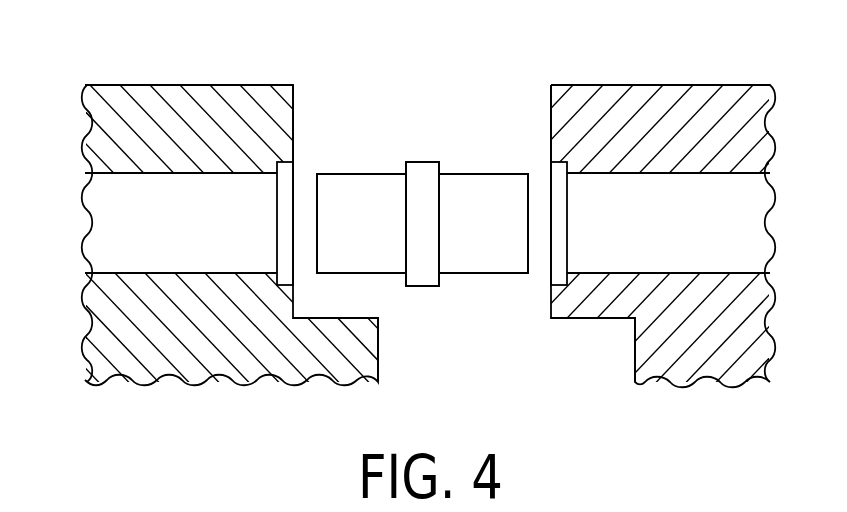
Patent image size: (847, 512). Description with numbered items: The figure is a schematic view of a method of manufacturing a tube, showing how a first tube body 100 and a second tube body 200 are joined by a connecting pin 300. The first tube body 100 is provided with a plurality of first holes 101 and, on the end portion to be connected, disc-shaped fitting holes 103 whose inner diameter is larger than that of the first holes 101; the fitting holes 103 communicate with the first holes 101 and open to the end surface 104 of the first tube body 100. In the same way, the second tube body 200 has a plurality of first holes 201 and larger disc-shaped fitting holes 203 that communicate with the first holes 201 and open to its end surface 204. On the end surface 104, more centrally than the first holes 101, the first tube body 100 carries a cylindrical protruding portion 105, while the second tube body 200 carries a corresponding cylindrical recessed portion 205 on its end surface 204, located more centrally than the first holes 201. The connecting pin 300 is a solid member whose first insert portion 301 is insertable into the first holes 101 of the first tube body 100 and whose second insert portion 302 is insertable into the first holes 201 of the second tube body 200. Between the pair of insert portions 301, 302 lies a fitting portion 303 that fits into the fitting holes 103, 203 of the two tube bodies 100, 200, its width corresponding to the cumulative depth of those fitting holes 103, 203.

The first tube body 100 is at (203, 76).
The first holes 101 is at (92, 209).
The fitting holes 103 is at (295, 173).
The end surface 104 is at (294, 101).
The cylindrical protruding portion 105 is at (380, 362).
The second tube body 200 is at (664, 76).
The first holes 201 is at (757, 217).
The fitting holes 203 is at (550, 173).
The end surface 204 is at (549, 100).
The cylindrical recessed portion 205 is at (634, 357).
The connecting pin 300 is at (424, 151).
The first insert portion 301 is at (362, 185).
The second insert portion 302 is at (475, 185).
The fitting portion 303 is at (423, 278).